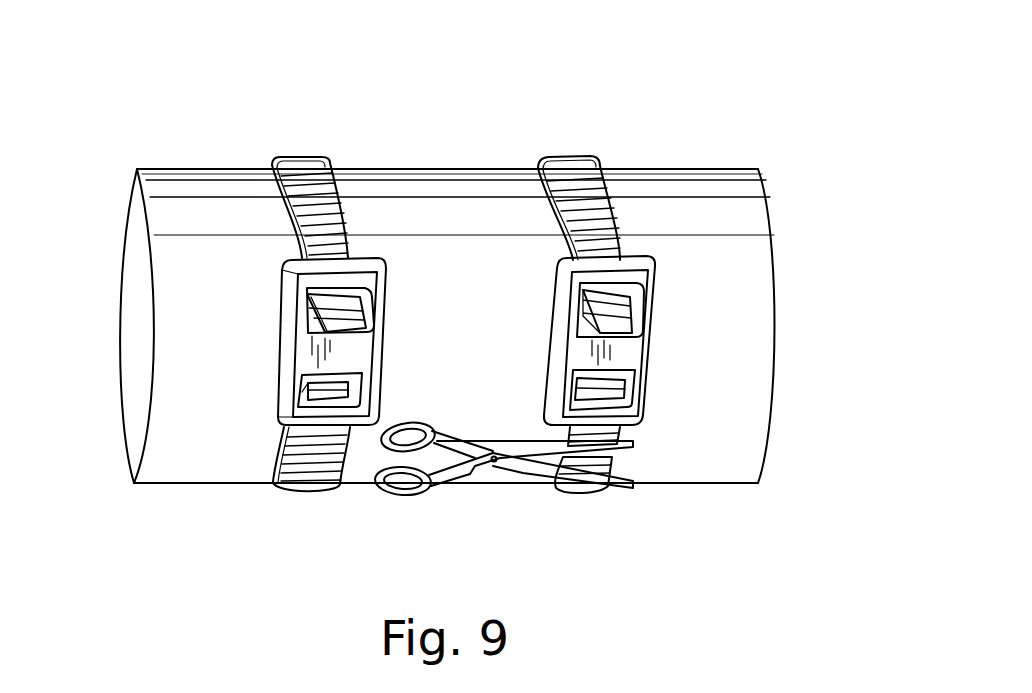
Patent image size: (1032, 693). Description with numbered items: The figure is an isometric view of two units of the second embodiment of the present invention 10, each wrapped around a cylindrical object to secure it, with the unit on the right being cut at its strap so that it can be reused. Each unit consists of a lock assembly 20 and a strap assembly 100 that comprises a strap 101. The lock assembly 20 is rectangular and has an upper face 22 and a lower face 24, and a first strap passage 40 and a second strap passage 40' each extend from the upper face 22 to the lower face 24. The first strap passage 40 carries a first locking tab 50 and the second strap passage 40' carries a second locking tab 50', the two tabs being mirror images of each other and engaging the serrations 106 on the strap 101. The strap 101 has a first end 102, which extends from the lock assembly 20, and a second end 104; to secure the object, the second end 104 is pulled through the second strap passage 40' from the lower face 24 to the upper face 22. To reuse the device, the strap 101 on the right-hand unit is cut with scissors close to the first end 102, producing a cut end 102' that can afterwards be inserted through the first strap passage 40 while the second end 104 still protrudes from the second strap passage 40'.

The present invention 10 is at (268, 110).
The lock assembly 20 is at (277, 317).
The upper face 22 is at (298, 342).
The lower face 24 is at (277, 352).
The first strap passage 40 is at (465, 402).
The second strap passage 40' is at (462, 262).
The first locking tab 50 is at (435, 460).
The second locking tab 50' is at (598, 197).
The strap assembly 100 is at (553, 152).
The strap 101 is at (283, 208).
The first end 102 is at (445, 487).
The cut end 102' is at (616, 501).
The second end 104 is at (376, 340).
The serrations 106 is at (285, 165).